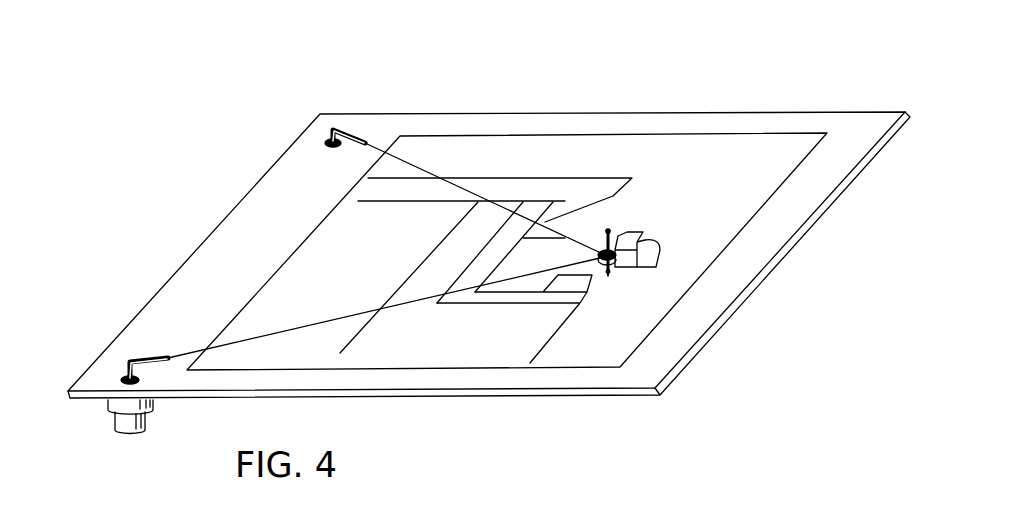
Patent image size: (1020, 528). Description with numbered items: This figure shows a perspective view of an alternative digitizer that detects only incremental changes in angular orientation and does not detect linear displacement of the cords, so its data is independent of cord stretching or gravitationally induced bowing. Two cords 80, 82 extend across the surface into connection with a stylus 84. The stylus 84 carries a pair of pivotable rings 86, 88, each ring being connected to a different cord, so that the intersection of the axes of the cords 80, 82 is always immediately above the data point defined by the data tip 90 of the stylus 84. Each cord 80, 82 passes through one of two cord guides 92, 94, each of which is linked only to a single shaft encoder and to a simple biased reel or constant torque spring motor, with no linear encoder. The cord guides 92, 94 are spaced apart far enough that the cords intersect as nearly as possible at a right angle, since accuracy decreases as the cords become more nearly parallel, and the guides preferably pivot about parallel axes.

The cord 80 is at (433, 174).
The cord 82 is at (283, 331).
The stylus 84 is at (656, 234).
The pivotable ring 86 is at (607, 274).
The pivotable ring 88 is at (602, 248).
The data tip 90 is at (610, 277).
The cord guide 92 is at (345, 130).
The cord guide 94 is at (147, 358).